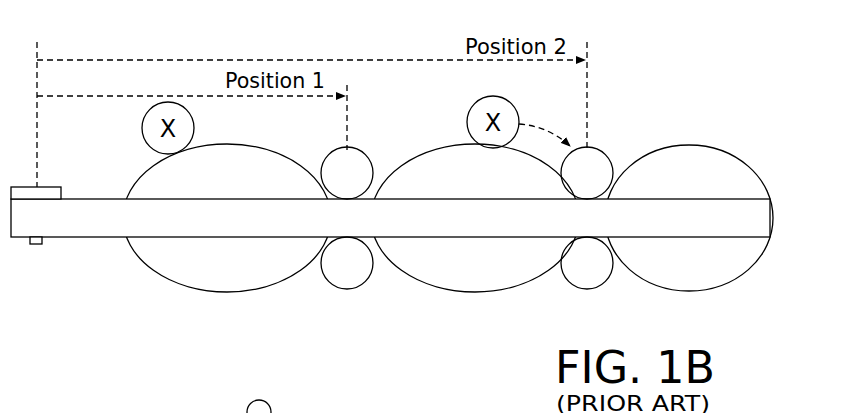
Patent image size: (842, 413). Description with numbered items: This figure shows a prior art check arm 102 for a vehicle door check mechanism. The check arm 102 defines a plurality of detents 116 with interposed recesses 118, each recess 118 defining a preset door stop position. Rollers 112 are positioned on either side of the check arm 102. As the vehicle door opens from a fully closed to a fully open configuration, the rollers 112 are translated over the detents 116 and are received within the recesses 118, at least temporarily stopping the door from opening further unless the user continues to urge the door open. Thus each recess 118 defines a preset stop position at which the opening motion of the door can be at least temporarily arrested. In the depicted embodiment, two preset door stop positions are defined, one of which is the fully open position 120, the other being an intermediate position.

The check arm 102 is at (741, 208).
The rollers 112 is at (366, 165).
The detents 116 is at (230, 158).
The recesses 118 is at (326, 172).
The fully open position 120 is at (271, 406).